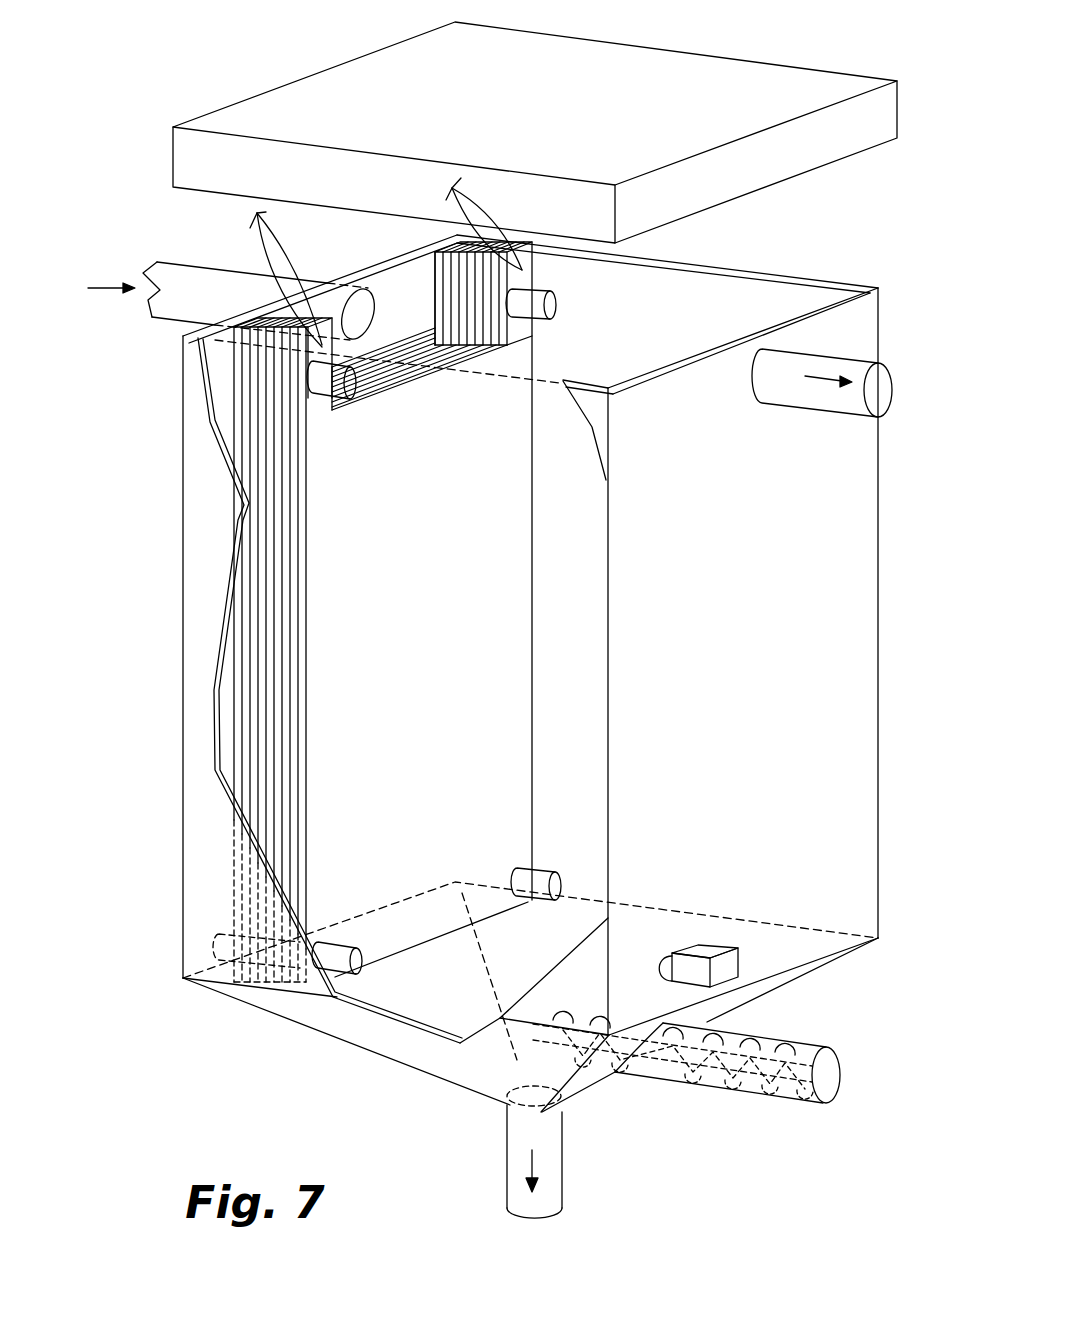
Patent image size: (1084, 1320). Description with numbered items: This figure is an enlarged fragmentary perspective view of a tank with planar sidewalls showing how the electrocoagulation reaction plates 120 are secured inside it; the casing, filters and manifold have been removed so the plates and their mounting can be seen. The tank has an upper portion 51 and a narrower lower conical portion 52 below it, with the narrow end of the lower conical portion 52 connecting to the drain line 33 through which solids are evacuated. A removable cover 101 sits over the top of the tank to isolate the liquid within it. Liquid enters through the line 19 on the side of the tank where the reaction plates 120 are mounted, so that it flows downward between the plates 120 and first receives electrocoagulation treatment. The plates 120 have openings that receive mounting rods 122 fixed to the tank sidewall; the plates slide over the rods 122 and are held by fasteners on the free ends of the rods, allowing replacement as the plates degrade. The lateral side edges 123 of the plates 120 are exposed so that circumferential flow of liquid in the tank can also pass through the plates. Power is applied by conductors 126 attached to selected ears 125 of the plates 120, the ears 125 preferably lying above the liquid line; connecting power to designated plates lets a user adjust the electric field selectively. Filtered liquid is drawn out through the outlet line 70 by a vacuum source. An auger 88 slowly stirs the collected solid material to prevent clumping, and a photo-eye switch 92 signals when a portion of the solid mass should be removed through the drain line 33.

The cover 101 is at (515, 123).
The upper portion of tank 51 is at (745, 303).
The line 19 is at (208, 263).
The conductors 126 is at (290, 237).
The reaction plates 120 is at (455, 615).
The ears 125 is at (533, 271).
The lateral side edges 123 is at (527, 638).
The mounting rods 122 is at (550, 304).
The outlet line 70 is at (840, 365).
The lower conical portion 52 is at (773, 987).
The drain line 33 is at (562, 1170).
The auger 88 is at (717, 1090).
The photo-eye switch 92 is at (723, 947).